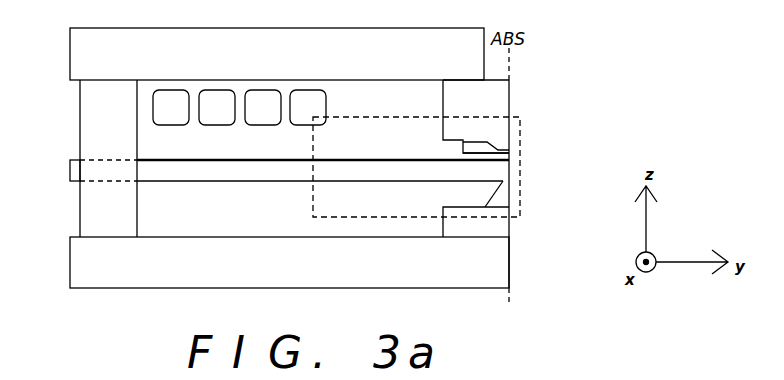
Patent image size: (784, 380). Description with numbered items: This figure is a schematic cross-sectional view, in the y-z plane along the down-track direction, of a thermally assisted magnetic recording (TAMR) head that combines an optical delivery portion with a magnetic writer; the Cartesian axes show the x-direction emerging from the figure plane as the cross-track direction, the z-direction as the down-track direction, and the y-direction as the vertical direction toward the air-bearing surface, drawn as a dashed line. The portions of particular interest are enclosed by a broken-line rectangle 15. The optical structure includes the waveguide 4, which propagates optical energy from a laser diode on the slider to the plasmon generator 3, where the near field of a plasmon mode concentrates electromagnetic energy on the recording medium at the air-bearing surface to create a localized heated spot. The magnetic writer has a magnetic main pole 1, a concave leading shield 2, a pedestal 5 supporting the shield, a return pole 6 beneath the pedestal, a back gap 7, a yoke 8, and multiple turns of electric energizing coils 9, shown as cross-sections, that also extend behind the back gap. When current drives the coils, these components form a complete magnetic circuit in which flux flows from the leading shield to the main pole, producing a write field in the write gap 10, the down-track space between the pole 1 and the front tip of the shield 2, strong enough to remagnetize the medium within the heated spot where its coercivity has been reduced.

The magnetic main pole 1 is at (500, 100).
The concave leading shield 2 is at (500, 196).
The plasmon generator 3 is at (509, 155).
The waveguide 4 is at (500, 171).
The pedestal 5 is at (500, 222).
The return pole 6 is at (79, 263).
The back gap 7 is at (90, 117).
The yoke 8 is at (79, 55).
The electric energizing coils 9 is at (303, 116).
The write gap 10 is at (550, 130).
The broken-line rectangle 15 is at (522, 128).